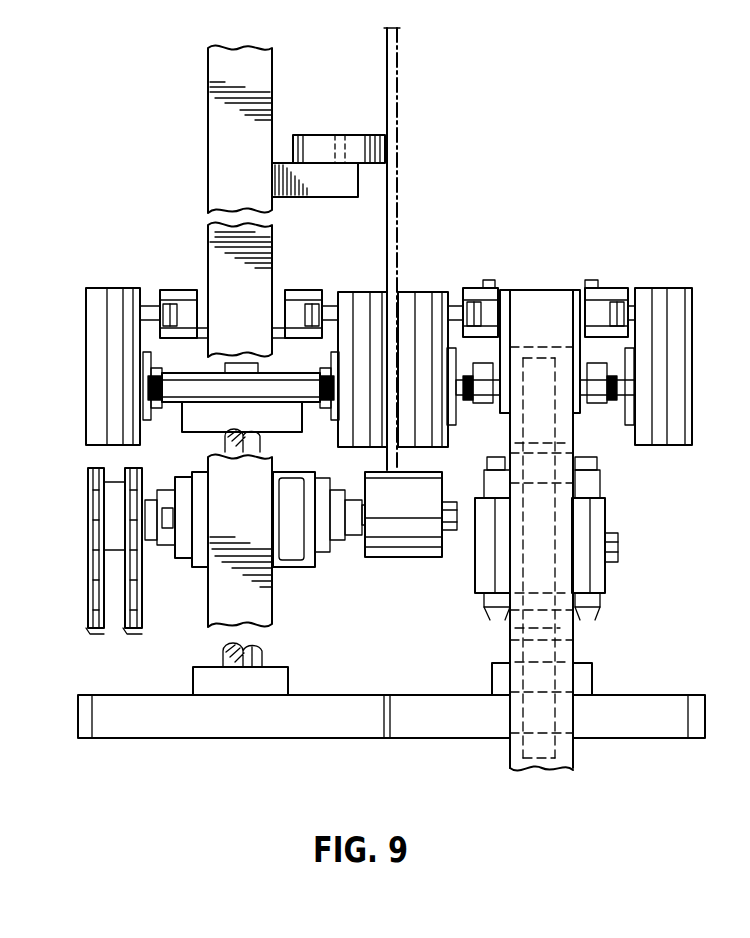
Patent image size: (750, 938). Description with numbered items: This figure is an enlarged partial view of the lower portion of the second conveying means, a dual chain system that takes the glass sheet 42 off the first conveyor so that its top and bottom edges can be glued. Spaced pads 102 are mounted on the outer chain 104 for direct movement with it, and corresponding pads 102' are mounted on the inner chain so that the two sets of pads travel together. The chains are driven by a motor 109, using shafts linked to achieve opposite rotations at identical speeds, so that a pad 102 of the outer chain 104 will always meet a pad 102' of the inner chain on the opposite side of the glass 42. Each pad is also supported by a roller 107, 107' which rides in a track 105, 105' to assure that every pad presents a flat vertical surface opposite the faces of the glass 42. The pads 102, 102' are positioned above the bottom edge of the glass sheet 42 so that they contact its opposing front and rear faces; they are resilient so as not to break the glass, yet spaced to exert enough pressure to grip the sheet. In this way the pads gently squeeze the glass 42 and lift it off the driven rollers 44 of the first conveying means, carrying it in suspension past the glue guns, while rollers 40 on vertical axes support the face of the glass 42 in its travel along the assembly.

The rollers 40 is at (322, 140).
The sheet of glass 42 is at (397, 88).
The driven rollers 44 is at (407, 537).
The pads 102 is at (568, 341).
The pads 102' is at (247, 330).
The outer chain 104 is at (150, 403).
The track 105 is at (603, 281).
The track 105' is at (155, 273).
The roller 107 is at (563, 281).
The roller 107' is at (307, 281).
The motor 109 is at (597, 525).